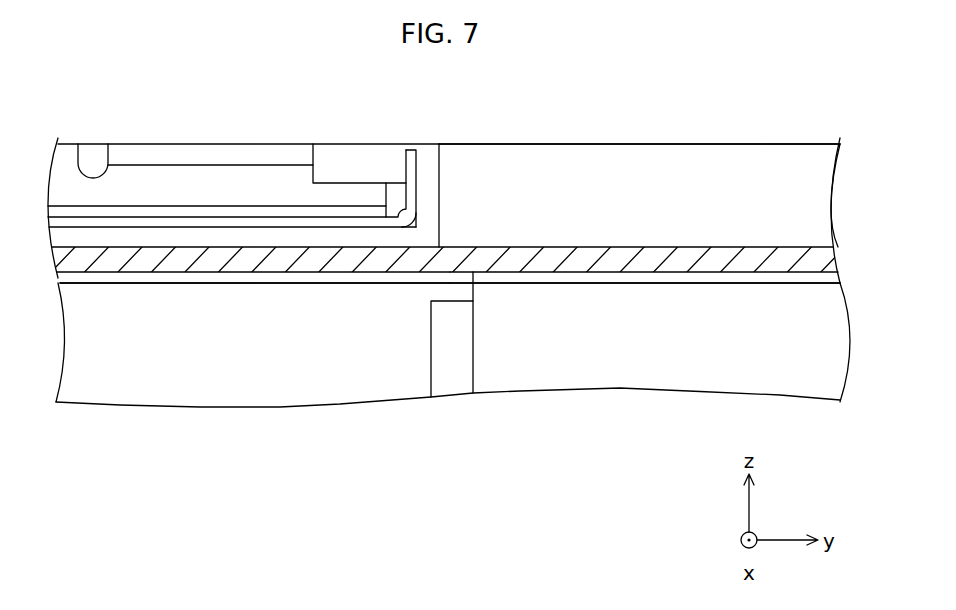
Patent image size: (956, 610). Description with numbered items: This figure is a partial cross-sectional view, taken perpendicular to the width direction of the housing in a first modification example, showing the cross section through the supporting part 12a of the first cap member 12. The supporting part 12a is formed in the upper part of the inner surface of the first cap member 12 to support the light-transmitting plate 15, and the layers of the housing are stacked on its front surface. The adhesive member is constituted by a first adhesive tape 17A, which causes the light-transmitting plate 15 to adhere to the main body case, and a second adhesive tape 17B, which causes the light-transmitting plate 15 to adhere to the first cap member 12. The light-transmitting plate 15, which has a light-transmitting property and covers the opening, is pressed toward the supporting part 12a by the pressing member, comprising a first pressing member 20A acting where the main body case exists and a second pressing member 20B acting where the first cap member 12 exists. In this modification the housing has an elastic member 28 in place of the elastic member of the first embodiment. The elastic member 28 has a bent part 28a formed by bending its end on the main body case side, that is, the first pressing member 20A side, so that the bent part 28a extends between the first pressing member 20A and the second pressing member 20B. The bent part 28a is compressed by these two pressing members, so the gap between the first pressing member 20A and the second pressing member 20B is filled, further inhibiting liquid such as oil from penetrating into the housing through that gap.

The first cap member 12 is at (193, 357).
The supporting part 12a is at (343, 285).
The light-transmitting plate 15 is at (74, 252).
The first adhesive tape 17A is at (776, 275).
The second adhesive tape 17B is at (147, 277).
The first pressing member 20A is at (563, 185).
The second pressing member 20B is at (290, 220).
The elastic member 28 is at (222, 237).
The bent part 28a is at (433, 195).